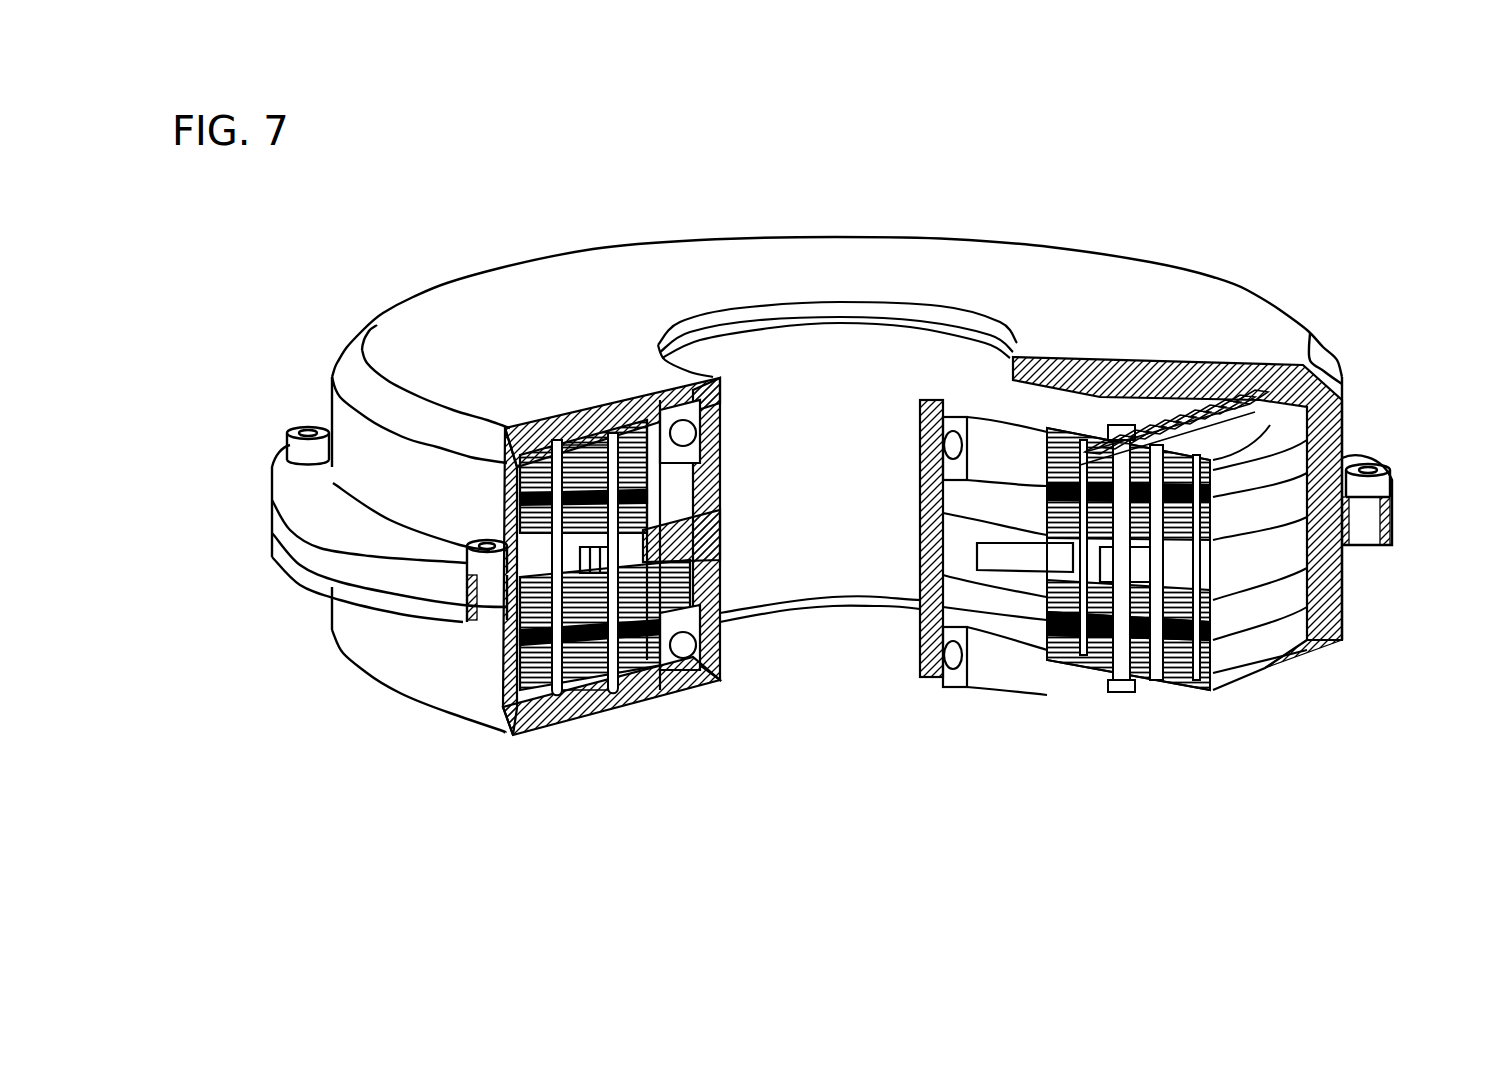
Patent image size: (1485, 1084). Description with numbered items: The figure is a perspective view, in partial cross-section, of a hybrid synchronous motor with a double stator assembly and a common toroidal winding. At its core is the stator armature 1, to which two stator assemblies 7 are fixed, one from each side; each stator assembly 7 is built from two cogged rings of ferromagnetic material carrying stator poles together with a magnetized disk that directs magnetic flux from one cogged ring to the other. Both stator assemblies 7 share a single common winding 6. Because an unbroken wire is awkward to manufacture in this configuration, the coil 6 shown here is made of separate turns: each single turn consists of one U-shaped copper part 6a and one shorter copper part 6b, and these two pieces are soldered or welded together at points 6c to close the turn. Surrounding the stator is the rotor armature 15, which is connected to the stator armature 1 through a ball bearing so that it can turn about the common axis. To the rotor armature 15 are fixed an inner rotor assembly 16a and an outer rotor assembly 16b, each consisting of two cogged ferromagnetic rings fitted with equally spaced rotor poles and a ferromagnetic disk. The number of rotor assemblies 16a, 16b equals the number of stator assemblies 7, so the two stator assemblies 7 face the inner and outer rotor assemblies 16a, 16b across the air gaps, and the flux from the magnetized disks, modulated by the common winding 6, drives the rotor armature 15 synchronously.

The stator armature 1 is at (953, 547).
The common winding 6 is at (503, 633).
The U-shaped copper part 6a is at (568, 722).
The shorter copper part 6b is at (580, 443).
The soldering points 6c is at (570, 453).
The stator assembly 7 is at (1097, 440).
The rotor armature 15 is at (435, 657).
The inner rotor assembly 16a is at (1062, 430).
The outer rotor assembly 16b is at (1113, 415).